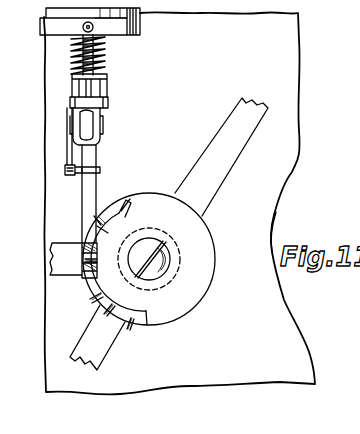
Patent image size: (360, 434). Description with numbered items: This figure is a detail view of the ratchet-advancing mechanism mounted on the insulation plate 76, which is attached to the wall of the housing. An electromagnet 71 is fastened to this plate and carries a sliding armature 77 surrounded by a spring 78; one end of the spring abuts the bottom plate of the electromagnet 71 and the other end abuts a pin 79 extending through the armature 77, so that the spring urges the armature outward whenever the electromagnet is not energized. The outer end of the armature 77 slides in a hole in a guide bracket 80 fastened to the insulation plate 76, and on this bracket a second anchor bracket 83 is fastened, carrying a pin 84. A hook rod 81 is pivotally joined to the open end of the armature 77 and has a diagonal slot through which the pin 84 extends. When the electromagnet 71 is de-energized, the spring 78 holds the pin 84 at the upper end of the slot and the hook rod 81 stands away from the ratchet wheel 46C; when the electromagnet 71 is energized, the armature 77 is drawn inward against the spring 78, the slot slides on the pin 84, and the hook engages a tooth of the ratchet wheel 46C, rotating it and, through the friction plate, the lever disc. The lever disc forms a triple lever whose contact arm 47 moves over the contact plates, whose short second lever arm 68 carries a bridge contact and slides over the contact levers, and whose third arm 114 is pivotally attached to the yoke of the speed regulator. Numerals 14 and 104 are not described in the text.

The electromagnet 71 is at (140, 13).
The sliding armature 77 is at (102, 63).
The spring 78 is at (105, 72).
The pin 79 is at (107, 99).
The guide bracket 80 is at (100, 110).
The anchor bracket 83 is at (70, 148).
The pin 84 is at (100, 170).
The hook rod 81 is at (90, 192).
The third arm 114 is at (62, 258).
The ratchet wheel 46C is at (203, 282).
The contact arm 47 is at (232, 124).
The second lever arm 68 is at (104, 349).
The insulation plate 76 is at (275, 188).
The dimension 14 is at (150, 432).
The part 104 is at (191, 431).